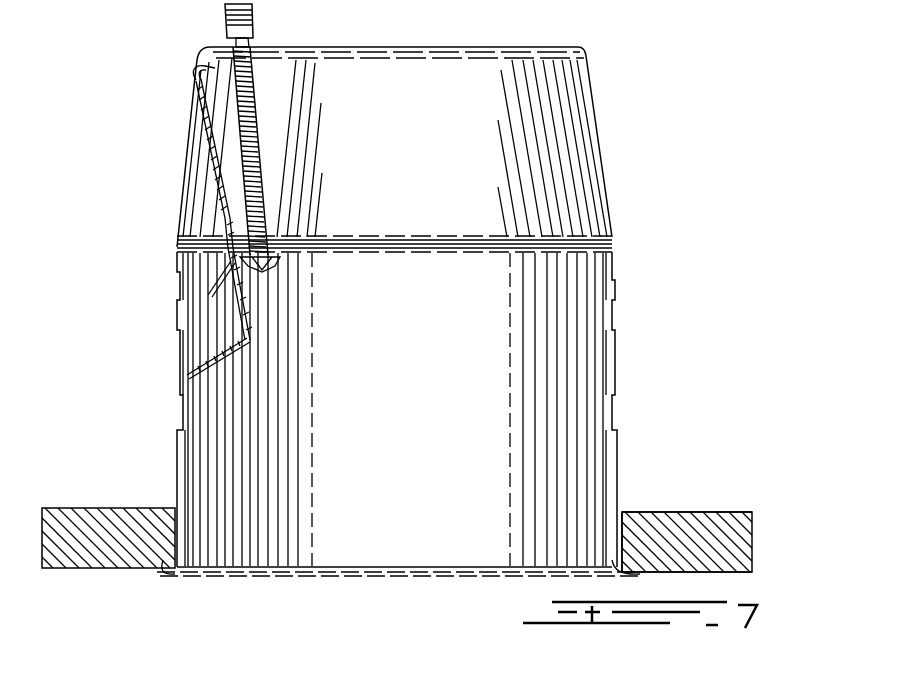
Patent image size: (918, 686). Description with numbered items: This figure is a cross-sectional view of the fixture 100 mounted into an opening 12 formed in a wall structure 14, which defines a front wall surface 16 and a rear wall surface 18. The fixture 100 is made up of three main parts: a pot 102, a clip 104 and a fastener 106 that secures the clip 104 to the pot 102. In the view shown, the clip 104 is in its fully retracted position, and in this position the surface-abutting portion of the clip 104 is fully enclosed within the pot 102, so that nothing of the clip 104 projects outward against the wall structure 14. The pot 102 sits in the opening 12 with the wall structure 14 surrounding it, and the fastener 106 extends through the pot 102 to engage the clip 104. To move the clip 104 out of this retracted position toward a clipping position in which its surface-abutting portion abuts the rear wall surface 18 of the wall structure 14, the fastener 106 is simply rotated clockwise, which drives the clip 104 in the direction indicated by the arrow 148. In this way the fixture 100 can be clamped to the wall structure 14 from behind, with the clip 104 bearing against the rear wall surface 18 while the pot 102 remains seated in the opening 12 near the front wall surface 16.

The fixture 100 is at (454, 311).
The pot 102 is at (600, 162).
The clip 104 is at (196, 125).
The fastener 106 is at (265, 148).
The arrow 148 is at (203, 248).
The opening 12 is at (621, 512).
The wall structure 14 is at (733, 540).
The rear wall surface 18 is at (707, 512).
The front wall surface 16 is at (725, 572).